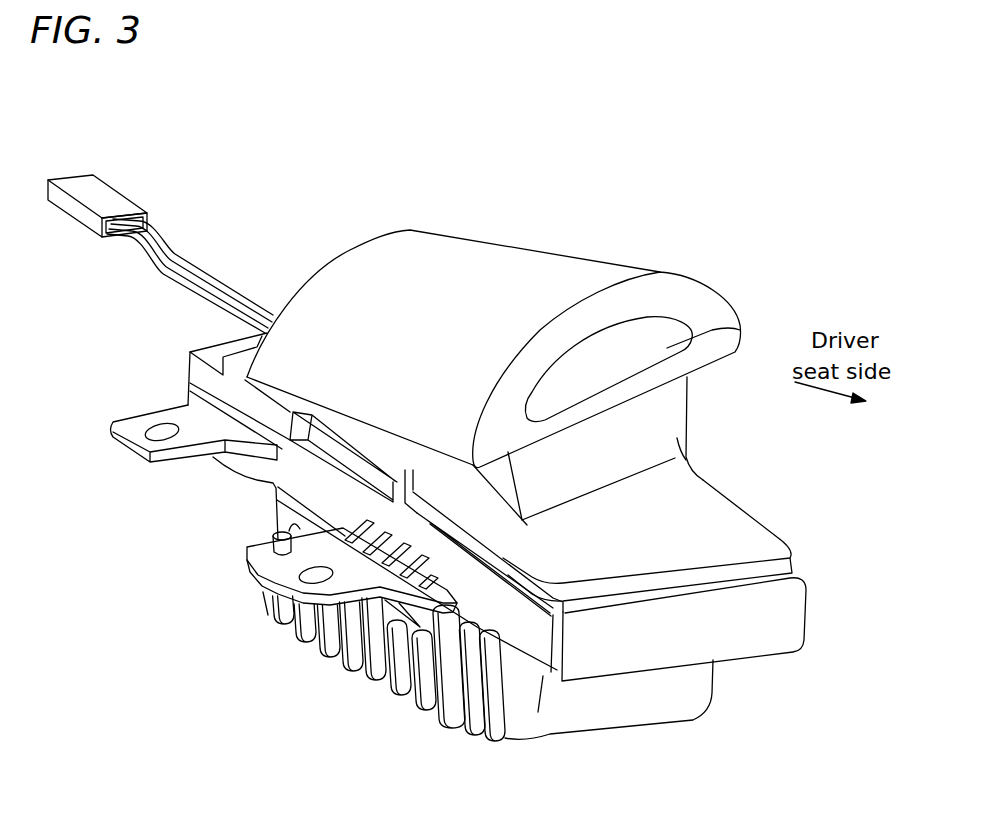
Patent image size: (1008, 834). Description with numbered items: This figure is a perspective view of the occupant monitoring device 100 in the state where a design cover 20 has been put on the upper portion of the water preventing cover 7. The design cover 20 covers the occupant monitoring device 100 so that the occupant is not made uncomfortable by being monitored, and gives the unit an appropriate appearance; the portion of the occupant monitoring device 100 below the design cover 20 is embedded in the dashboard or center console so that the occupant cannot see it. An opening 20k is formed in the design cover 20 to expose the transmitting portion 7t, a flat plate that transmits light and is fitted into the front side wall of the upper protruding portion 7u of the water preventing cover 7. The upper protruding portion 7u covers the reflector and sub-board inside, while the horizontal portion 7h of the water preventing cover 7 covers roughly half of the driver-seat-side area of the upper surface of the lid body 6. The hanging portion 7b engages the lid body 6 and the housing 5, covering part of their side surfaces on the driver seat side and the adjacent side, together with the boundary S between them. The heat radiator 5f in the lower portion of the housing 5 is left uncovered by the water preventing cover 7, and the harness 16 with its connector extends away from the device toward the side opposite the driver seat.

The housing 5 is at (185, 390).
The heat radiator 5f is at (498, 755).
The lid body 6 is at (195, 352).
The water preventing cover 7 is at (770, 522).
The hanging portion 7b is at (803, 612).
The horizontal portion 7h is at (688, 508).
The transmitting portion 7t is at (740, 330).
The upper protruding portion 7u is at (667, 417).
The harness 16 is at (207, 265).
The design cover 20 is at (530, 252).
The opening 20k is at (680, 318).
The boundary S is at (537, 735).
The occupant monitoring device 100 is at (711, 754).